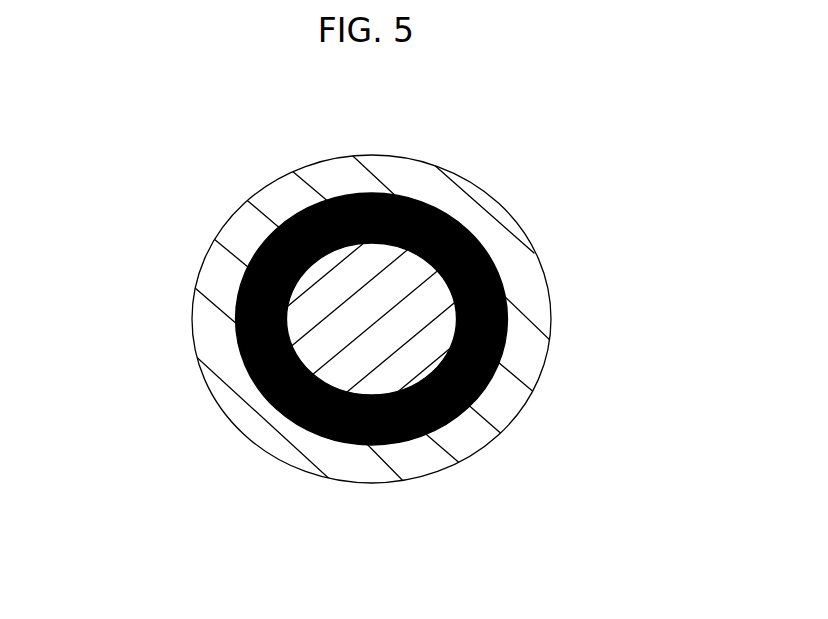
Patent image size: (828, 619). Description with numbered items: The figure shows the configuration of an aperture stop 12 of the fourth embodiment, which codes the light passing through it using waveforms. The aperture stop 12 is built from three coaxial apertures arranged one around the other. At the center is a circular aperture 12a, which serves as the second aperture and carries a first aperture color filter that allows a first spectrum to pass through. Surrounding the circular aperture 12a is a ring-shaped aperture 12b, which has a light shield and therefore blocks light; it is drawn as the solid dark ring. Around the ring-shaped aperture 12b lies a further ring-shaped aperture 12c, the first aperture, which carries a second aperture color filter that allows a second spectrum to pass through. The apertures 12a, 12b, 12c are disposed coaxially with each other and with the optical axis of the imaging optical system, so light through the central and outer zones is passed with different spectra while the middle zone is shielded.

The aperture stop 12 is at (462, 137).
The circular aperture 12a is at (433, 284).
The ring-shaped aperture 12b is at (268, 283).
The ring-shaped aperture 12c is at (280, 212).